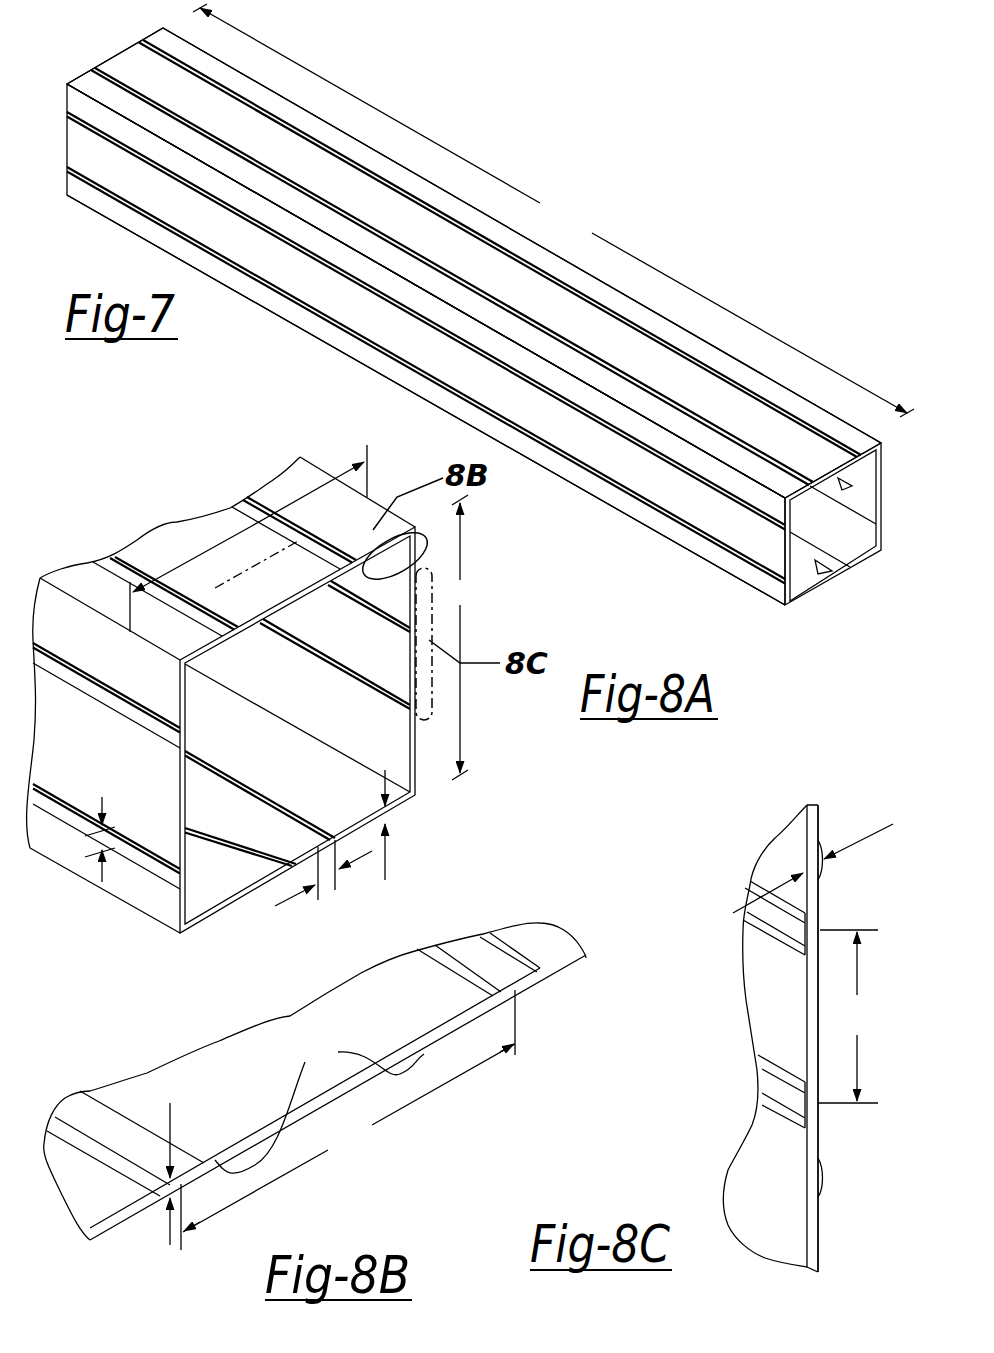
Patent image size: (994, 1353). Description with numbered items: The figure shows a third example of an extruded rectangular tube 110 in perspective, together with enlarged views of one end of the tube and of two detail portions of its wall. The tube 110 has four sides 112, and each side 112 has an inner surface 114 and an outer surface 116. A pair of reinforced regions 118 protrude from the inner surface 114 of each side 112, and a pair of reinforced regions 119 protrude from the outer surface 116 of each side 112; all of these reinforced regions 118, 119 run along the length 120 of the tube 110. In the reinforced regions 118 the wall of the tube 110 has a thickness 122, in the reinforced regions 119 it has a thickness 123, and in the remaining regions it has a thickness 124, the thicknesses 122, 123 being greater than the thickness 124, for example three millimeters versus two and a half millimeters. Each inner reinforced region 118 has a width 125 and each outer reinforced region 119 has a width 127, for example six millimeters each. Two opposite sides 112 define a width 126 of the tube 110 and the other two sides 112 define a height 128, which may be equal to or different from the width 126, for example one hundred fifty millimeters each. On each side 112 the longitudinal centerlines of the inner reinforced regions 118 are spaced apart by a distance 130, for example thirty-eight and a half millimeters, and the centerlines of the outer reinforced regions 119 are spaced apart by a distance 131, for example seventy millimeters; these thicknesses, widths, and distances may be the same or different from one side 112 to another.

In FIG. 7, the rectangular tube 110 is at (459, 171).
In FIG. 8A, the rectangular tube 110 is at (221, 695).
In FIG. 7, the side 112 is at (93, 84).
In FIG. 7, the inner surface 114 is at (847, 509).
In FIG. 8B, the inner surface 114 is at (315, 1081).
In FIG. 8C, the inner surface 114 is at (797, 1003).
In FIG. 7, the outer surface 116 is at (769, 430).
In FIG. 8C, the outer surface 116 is at (820, 1236).
In FIG. 7, the reinforced region 118 is at (846, 478).
In FIG. 8A, the reinforced region 118 is at (382, 611).
In FIG. 8B, the reinforced region 118 is at (319, 1103).
In FIG. 8C, the reinforced region 118 is at (781, 916).
In FIG. 7, the reinforced region 119 is at (598, 358).
In FIG. 8A, the reinforced region 119 is at (258, 503).
In FIG. 8B, the reinforced region 119 is at (84, 1108).
In FIG. 8C, the reinforced region 119 is at (826, 850).
In FIG. 7, the length 120 is at (553, 210).
In FIG. 8C, the thickness 122 is at (831, 858).
In FIG. 8B, the thickness 123 is at (175, 1198).
In FIG. 8A, the thickness 124 is at (389, 836).
In FIG. 8A, the width 125 is at (292, 906).
In FIG. 8A, the width 126 is at (248, 538).
In FIG. 8A, the width 127 is at (100, 823).
In FIG. 8A, the height 128 is at (469, 637).
In FIG. 8C, the distance 130 is at (848, 1016).
In FIG. 8B, the distance 131 is at (349, 1111).